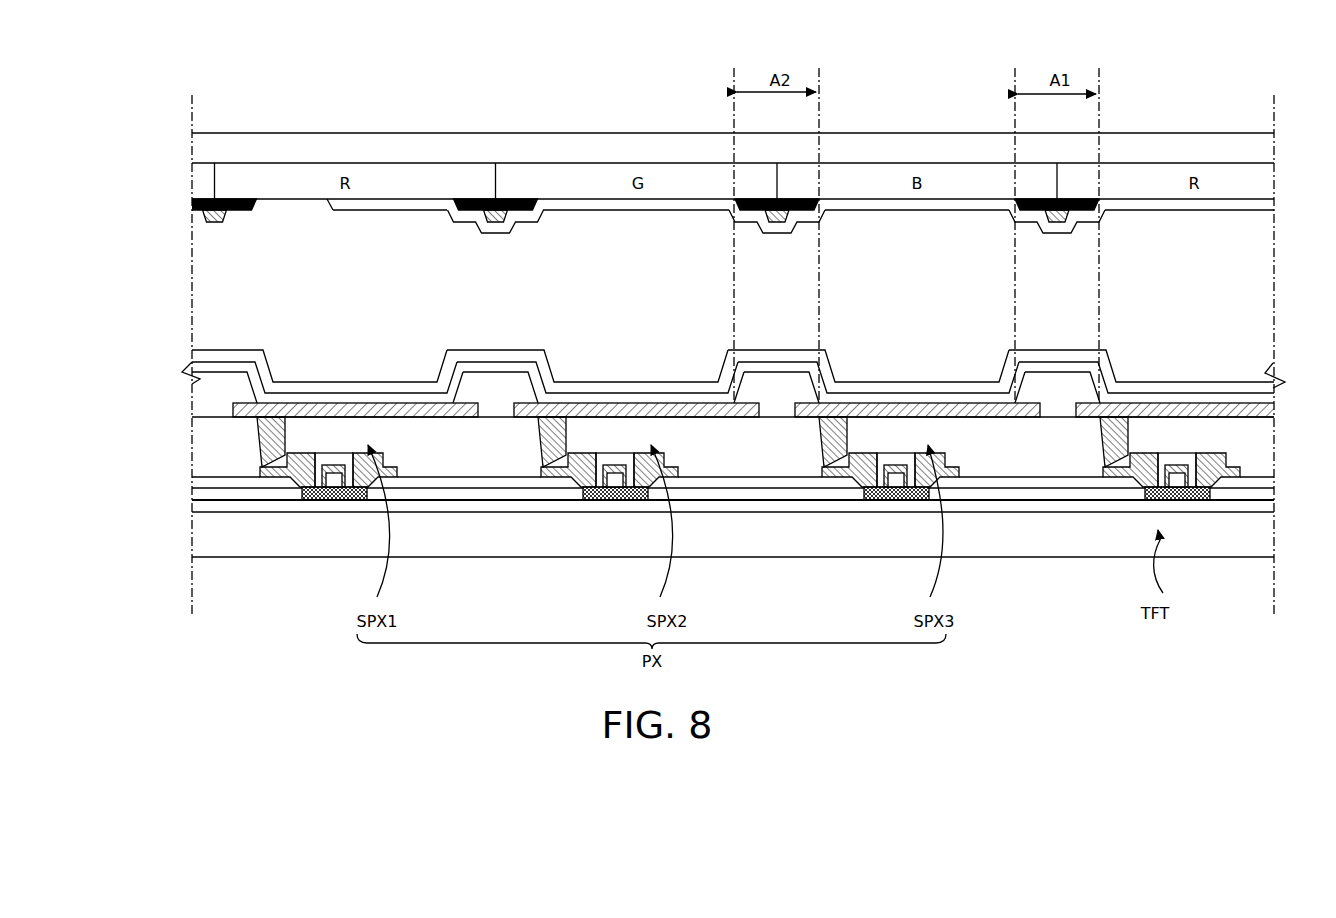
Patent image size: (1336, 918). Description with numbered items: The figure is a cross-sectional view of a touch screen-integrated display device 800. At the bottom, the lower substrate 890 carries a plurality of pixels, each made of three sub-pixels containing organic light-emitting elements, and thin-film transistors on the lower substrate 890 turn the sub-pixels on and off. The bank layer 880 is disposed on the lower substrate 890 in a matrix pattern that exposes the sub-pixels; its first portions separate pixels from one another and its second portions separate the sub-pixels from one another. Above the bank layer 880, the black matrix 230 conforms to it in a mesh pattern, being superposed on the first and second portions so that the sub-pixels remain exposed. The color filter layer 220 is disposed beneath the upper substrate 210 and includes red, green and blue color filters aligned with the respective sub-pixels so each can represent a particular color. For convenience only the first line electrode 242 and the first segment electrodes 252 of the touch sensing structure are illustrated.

The touch screen-integrated display device 800 is at (1254, 28).
The upper substrate 210 is at (1250, 147).
The color filter layer 220 is at (1250, 180).
The first segment electrodes 252 is at (1250, 208).
The black matrix 230 is at (202, 197).
The first line electrode 242 is at (235, 197).
The bank layer 880 is at (208, 387).
The lower substrate 890 is at (1243, 541).